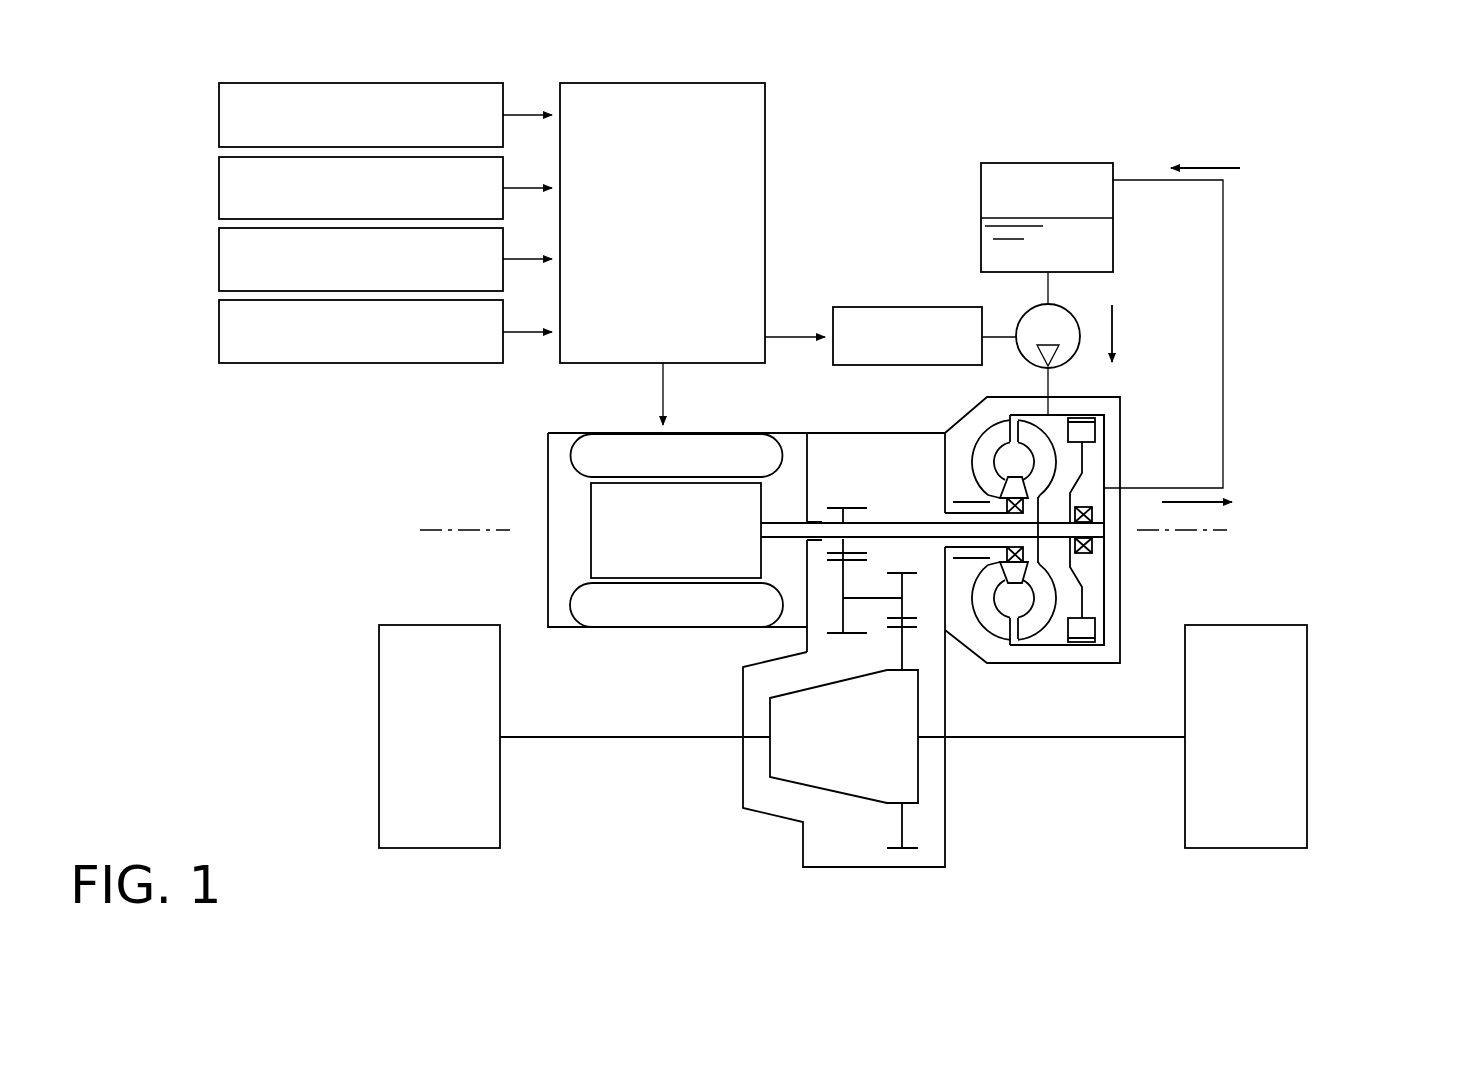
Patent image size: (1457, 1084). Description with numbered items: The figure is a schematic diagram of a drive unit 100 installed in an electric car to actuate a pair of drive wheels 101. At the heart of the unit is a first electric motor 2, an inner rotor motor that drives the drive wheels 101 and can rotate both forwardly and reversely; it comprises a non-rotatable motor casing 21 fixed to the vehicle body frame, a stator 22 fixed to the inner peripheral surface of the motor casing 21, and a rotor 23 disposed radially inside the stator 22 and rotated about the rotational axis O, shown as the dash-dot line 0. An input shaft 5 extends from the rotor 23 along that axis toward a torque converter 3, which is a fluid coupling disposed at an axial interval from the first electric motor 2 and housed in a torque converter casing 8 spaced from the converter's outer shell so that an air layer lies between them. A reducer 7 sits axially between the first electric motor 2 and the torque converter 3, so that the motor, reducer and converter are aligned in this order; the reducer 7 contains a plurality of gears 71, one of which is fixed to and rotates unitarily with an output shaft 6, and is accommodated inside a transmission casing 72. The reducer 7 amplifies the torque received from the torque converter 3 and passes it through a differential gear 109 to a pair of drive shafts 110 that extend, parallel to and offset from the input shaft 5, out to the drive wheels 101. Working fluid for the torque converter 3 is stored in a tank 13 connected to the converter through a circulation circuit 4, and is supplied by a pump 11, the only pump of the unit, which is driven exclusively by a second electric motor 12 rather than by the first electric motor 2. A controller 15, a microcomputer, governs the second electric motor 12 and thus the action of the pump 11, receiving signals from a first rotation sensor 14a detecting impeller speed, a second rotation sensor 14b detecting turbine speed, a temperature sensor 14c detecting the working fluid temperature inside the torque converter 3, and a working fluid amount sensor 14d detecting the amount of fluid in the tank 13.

The drive unit 100 is at (1292, 130).
The controller 15 is at (660, 88).
The first rotation sensor 14a is at (219, 118).
The second rotation sensor 14b is at (219, 190).
The temperature sensor 14c is at (219, 262).
The working fluid amount sensor 14d is at (219, 335).
The tank 13 is at (1052, 167).
The second electric motor 12 is at (878, 312).
The pump 11 is at (1066, 320).
The circulation circuit 4 is at (1225, 325).
The torque converter 3 is at (1085, 402).
The torque converter casing 8 is at (1122, 425).
The first electric motor 2 is at (680, 509).
The stator 22 is at (613, 447).
The rotor 23 is at (607, 528).
The motor casing 21 is at (787, 433).
The input shaft 5 is at (868, 527).
The output shaft 6 is at (907, 520).
The rotational axis 0 is at (823, 531).
The gear 71 is at (833, 560).
The transmission casing 72 is at (745, 667).
The reducer 7 is at (824, 648).
The differential gear 109 is at (813, 775).
The drive shaft 110 is at (570, 742).
The drive wheel 101 is at (388, 690).